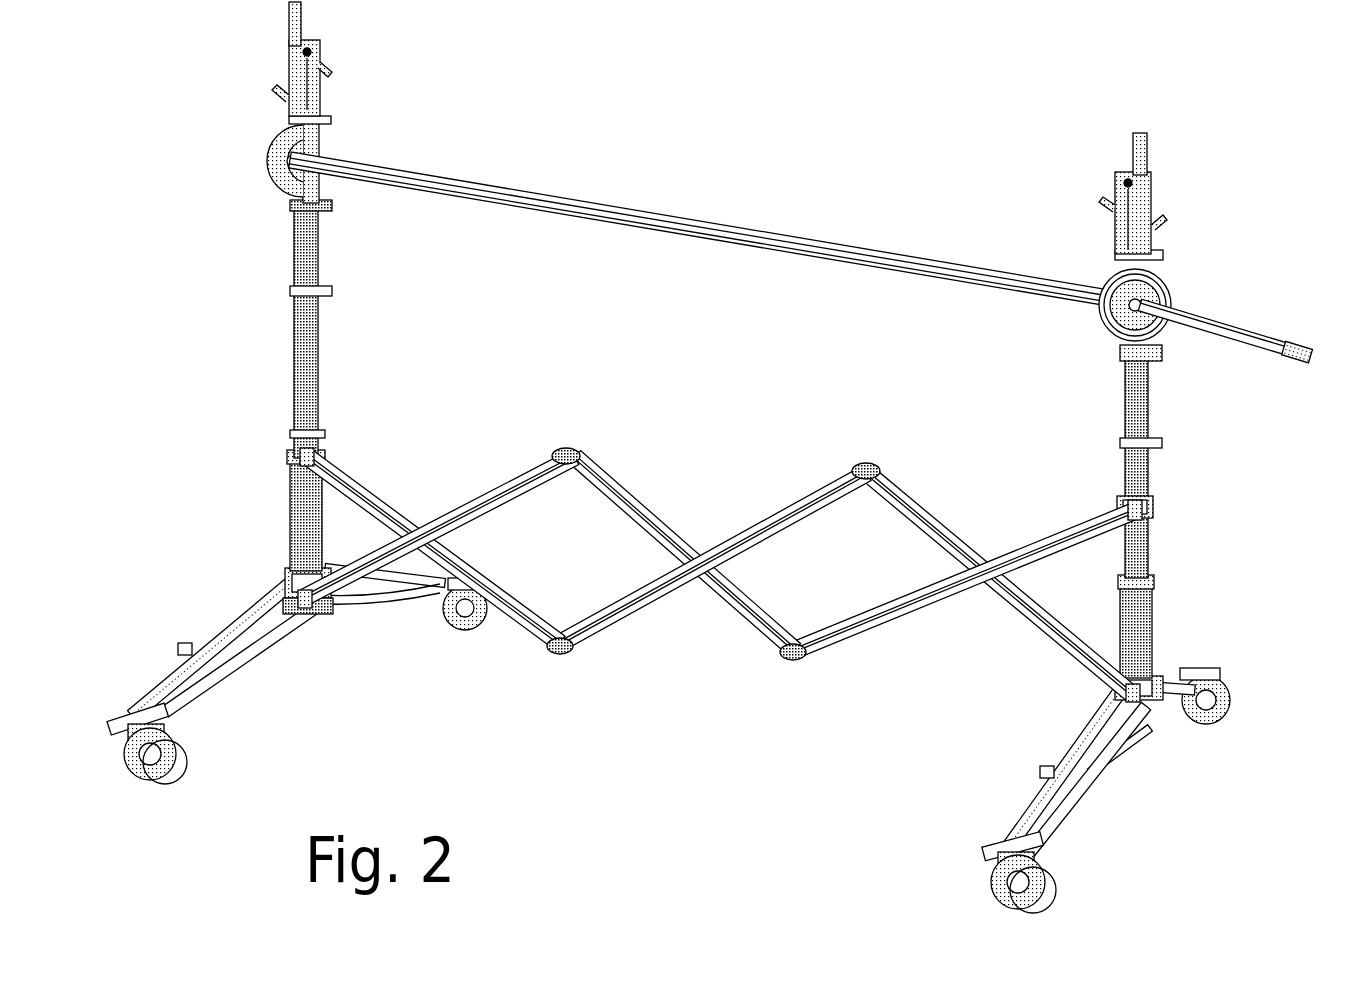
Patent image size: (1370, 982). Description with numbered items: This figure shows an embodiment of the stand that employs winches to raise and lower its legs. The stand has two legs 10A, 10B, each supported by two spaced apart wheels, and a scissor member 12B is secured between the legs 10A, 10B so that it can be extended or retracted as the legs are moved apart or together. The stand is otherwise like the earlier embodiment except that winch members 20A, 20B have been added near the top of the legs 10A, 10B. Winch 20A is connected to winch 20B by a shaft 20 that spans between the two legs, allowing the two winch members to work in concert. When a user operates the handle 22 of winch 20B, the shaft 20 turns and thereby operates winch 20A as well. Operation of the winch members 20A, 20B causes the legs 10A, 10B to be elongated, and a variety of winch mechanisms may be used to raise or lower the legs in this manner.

The leg 10A is at (297, 393).
The leg 10B is at (1141, 523).
The scissor member 12B is at (690, 618).
The shaft 20 is at (714, 260).
The winch member 20A is at (204, 122).
The winch member 20B is at (1069, 256).
The handle 22 is at (1244, 275).